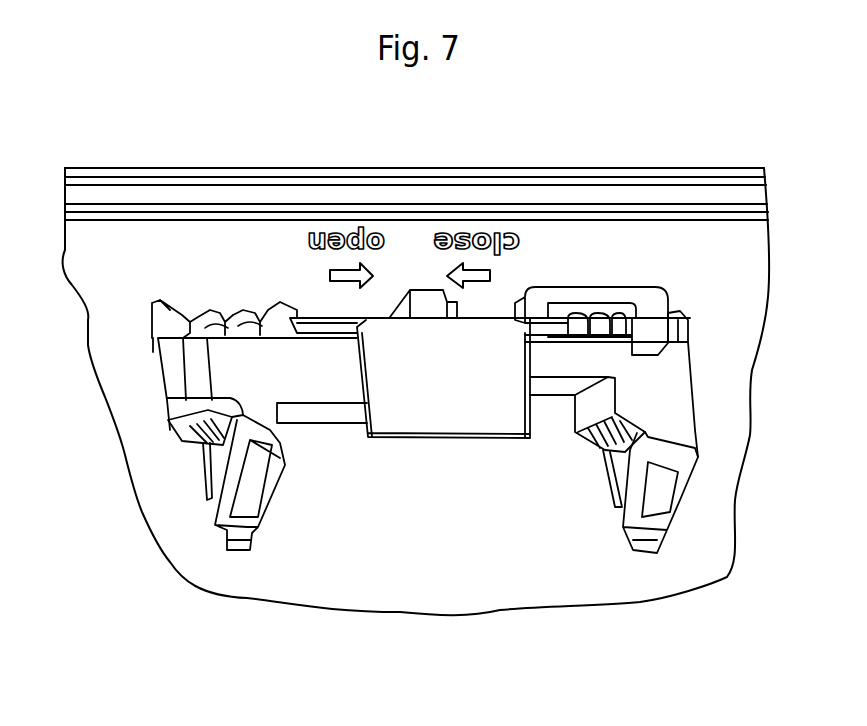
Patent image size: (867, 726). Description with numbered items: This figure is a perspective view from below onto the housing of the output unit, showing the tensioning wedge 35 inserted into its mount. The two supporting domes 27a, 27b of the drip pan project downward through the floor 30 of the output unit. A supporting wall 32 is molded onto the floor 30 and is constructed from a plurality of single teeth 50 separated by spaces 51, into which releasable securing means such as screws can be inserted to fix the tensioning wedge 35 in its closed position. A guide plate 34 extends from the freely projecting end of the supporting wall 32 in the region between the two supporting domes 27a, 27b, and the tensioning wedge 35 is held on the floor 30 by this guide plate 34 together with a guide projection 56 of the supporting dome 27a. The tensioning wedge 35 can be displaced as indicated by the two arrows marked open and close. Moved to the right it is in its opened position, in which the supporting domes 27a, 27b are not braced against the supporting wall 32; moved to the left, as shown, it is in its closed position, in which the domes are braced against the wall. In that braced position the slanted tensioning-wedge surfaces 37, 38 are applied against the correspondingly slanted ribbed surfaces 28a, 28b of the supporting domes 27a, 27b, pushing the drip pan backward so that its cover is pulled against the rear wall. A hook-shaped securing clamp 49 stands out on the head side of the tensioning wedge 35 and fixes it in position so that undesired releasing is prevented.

The supporting dome 27a is at (215, 512).
The supporting dome 27b is at (680, 500).
The ribbed surface 28a is at (214, 452).
The ribbed surface 28b is at (645, 432).
The floor 30 is at (457, 590).
The supporting wall 32 is at (323, 320).
The guide plate 34 is at (447, 413).
The tensioning wedge 35 is at (675, 372).
The tensioning-wedge surface 37 is at (180, 441).
The tensioning-wedge surface 38 is at (600, 452).
The securing clamp 49 is at (637, 290).
The single teeth 50 is at (222, 320).
The spaces 51 is at (207, 328).
The guide projection 56 is at (167, 398).